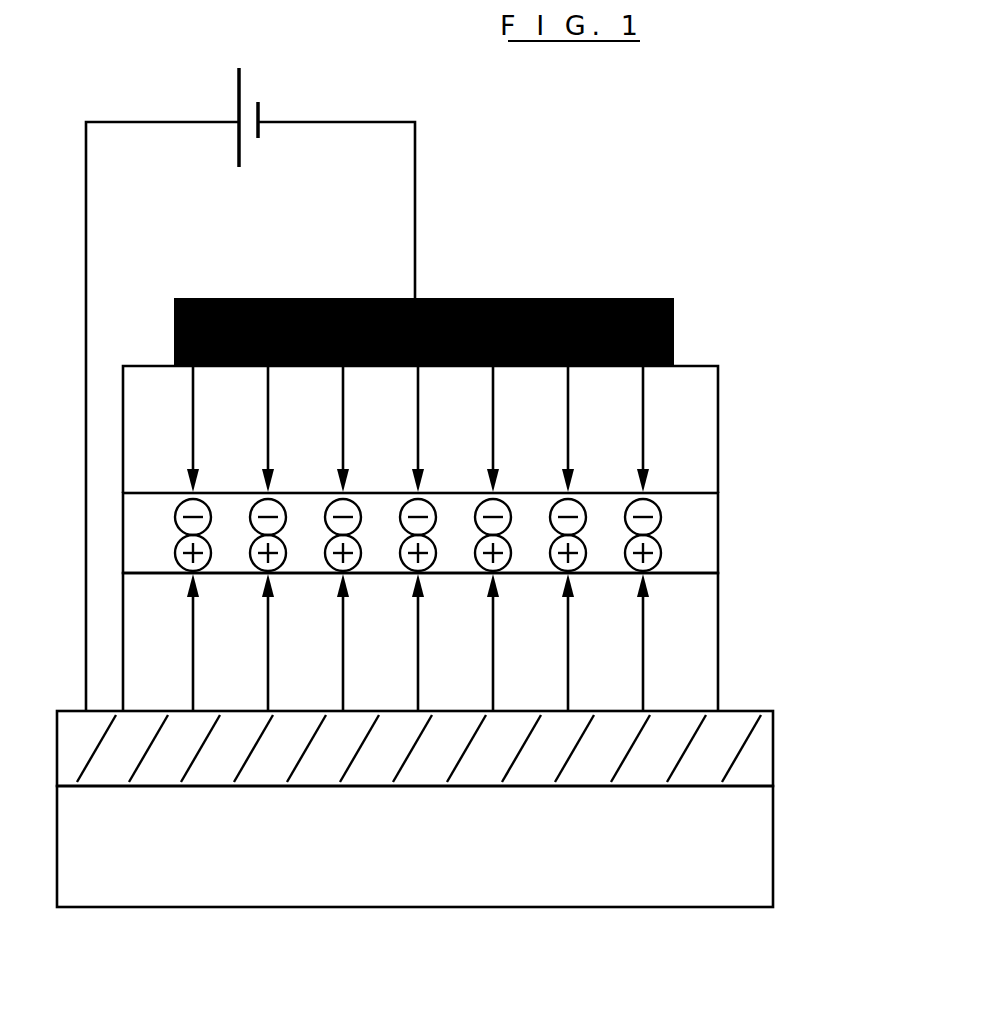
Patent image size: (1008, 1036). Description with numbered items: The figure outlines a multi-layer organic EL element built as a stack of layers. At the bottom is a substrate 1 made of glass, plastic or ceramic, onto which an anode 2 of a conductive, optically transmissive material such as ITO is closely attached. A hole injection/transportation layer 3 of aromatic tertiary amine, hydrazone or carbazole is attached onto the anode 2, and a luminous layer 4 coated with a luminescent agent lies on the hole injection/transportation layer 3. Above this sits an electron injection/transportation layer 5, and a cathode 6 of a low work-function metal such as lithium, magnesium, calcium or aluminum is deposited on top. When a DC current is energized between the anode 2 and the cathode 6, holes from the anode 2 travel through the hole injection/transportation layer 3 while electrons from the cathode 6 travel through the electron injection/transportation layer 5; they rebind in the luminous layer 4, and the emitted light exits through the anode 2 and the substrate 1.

The substrate 1 is at (803, 853).
The anode 2 is at (803, 750).
The hole injection/transportation layer 3 is at (753, 646).
The luminous layer 4 is at (753, 535).
The electron injection/transportation layer 5 is at (753, 439).
The cathode 6 is at (706, 328).